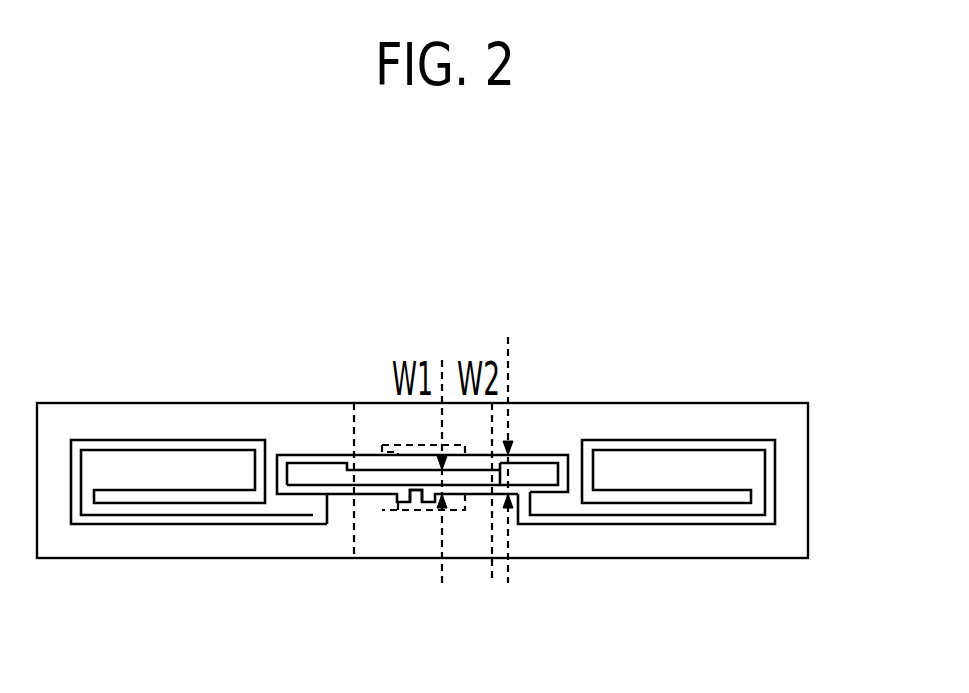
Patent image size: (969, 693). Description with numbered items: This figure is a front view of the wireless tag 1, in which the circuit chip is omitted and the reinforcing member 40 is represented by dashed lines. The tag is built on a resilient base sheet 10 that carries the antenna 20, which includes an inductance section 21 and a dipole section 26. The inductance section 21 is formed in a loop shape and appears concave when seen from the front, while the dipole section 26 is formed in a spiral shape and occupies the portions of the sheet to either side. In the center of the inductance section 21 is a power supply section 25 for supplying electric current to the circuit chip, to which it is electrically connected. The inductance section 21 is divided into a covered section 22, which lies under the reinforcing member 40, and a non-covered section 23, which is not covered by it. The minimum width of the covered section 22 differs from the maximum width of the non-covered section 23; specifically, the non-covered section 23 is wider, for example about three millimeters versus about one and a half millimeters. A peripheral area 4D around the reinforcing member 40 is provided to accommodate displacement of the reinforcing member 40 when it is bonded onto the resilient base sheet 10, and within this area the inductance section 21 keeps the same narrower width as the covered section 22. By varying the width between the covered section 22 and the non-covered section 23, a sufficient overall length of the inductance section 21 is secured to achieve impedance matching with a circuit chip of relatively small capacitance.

The wireless tag 1 is at (672, 315).
The resilient base sheet 10 is at (745, 412).
The antenna 20 is at (787, 433).
The inductance section 21 is at (532, 457).
The covered section 22 is at (402, 502).
The non-covered section 23 is at (565, 453).
The power supply section 25 is at (420, 502).
The dipole section 26 is at (650, 525).
The reinforcing member 40 is at (383, 511).
The peripheral area 4D is at (354, 430).